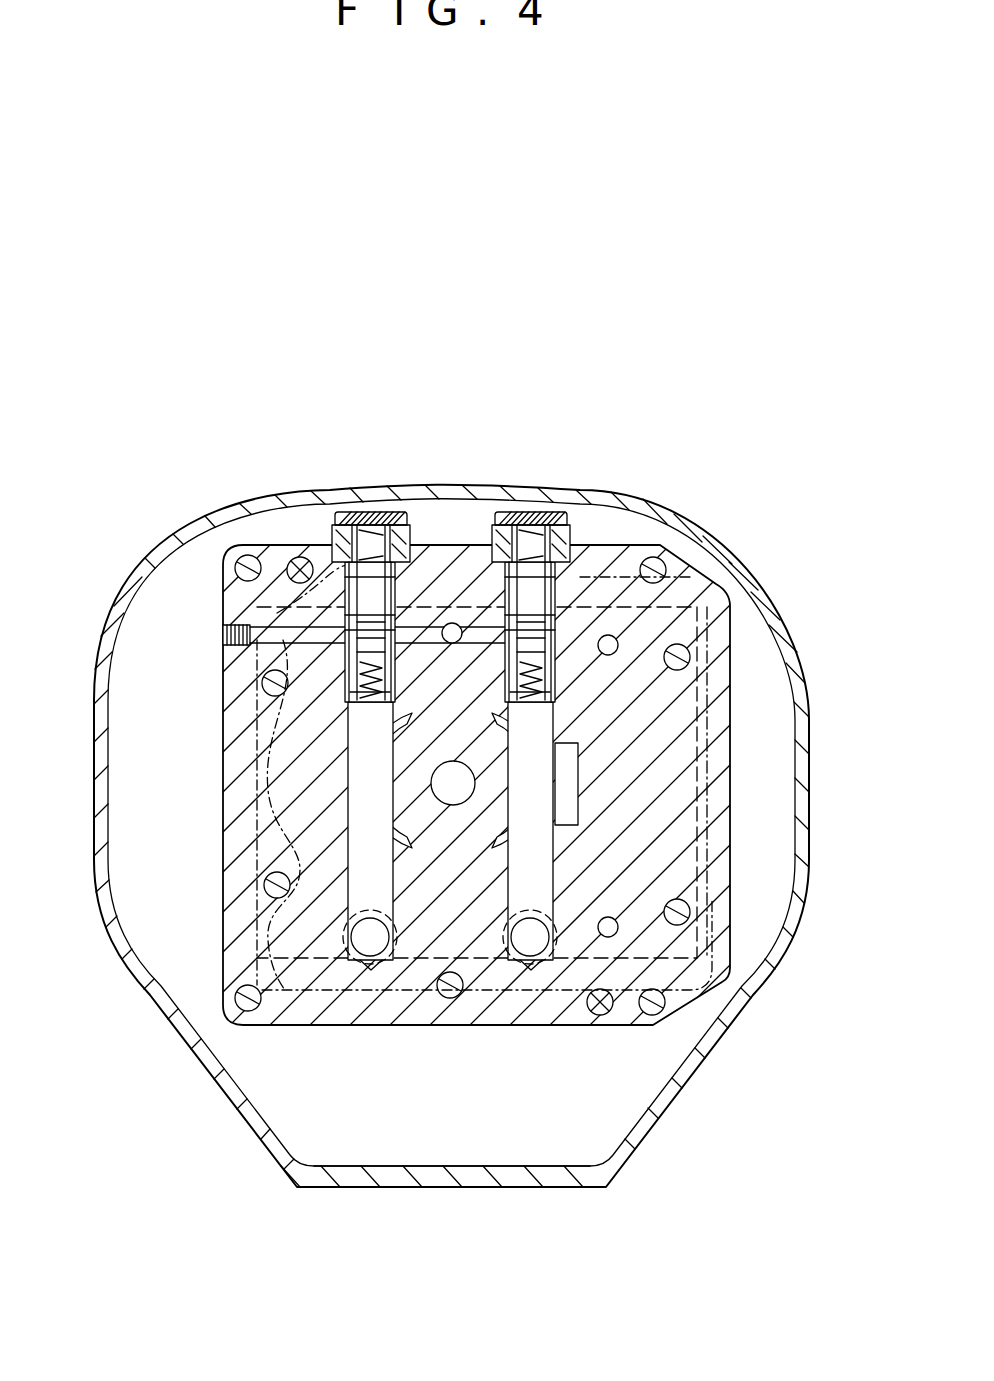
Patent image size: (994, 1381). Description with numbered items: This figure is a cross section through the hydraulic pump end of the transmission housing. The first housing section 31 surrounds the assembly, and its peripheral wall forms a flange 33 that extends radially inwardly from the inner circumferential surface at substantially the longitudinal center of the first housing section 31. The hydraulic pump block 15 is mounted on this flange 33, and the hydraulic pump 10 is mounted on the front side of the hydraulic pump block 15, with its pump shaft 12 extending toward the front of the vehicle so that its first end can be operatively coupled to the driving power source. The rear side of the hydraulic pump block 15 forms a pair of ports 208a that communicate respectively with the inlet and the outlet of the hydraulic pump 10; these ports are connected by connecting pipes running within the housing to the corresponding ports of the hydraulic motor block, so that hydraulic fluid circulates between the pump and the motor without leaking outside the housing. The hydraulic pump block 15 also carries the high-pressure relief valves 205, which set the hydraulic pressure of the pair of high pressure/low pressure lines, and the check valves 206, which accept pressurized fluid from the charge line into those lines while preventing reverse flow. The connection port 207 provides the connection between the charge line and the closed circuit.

The hydraulic pump 10 is at (250, 792).
The pump shaft 12 is at (453, 787).
The hydraulic pump block 15 is at (303, 1010).
The first housing section 31 is at (398, 1177).
The flange 33 is at (323, 1123).
The high-pressure relief valves 205 is at (373, 520).
The check valves 206 is at (690, 607).
The connection port 207 is at (450, 624).
The ports 208a is at (440, 1000).